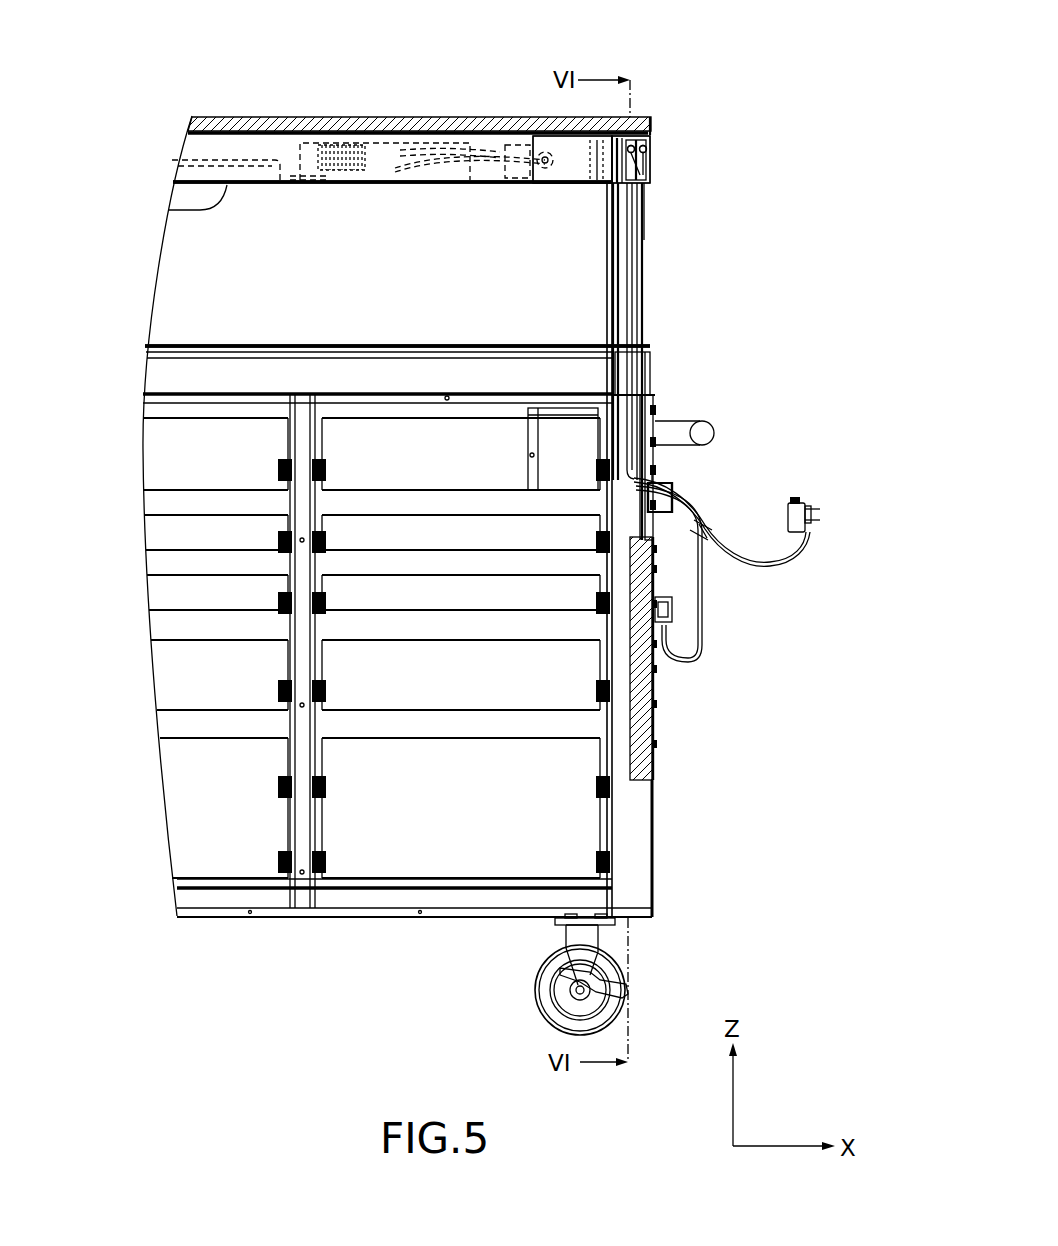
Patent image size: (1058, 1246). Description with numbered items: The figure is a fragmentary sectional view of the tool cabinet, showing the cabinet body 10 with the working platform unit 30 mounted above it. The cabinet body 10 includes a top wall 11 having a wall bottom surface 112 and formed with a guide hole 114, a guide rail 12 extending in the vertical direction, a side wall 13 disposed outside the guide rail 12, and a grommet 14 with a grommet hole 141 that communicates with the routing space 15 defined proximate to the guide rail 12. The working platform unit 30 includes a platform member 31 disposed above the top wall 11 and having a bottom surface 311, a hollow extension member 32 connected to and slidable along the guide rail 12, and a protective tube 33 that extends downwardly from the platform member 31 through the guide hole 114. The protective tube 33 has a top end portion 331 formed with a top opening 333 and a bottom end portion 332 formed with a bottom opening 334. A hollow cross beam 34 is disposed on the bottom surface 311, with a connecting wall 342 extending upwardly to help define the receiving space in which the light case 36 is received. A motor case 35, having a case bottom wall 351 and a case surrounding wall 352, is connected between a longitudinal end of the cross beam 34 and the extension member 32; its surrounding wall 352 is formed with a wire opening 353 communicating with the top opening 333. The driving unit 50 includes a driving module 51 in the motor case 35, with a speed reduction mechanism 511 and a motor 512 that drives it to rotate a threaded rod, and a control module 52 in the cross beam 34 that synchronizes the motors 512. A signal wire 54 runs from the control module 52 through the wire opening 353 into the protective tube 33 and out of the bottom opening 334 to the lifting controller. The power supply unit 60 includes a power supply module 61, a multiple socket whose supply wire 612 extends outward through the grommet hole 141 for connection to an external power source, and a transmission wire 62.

The cabinet body 10 is at (165, 822).
The top wall 11 is at (373, 392).
The wall bottom surface 112 is at (215, 397).
The guide hole 114 is at (645, 393).
The guide rail 12 is at (715, 433).
The side wall 13 is at (656, 855).
The grommet 14 is at (656, 478).
The grommet hole 141 is at (660, 497).
The routing space 15 is at (640, 812).
The working platform unit 30 is at (430, 143).
The platform member 31 is at (293, 131).
The bottom surface 311 is at (320, 145).
The extension member 32 is at (642, 280).
The protective tube 33 is at (637, 308).
The top end portion 331 is at (652, 157).
The top opening 333 is at (631, 159).
The bottom end portion 332 is at (640, 378).
The bottom opening 334 is at (652, 410).
The cross beam 34 is at (170, 208).
The connecting wall 342 is at (220, 143).
The motor case 35 is at (558, 177).
The case bottom wall 351 is at (572, 159).
The case surrounding wall 352 is at (600, 172).
The wire opening 353 is at (651, 115).
The light case 36 is at (200, 163).
The driving unit 50 is at (366, 124).
The driving module 51 is at (654, 147).
The speed reduction mechanism 511 is at (637, 149).
The motor 512 is at (648, 203).
The control module 52 is at (413, 148).
The signal wire 54 is at (483, 150).
The power supply unit 60 is at (657, 683).
The power supply module 61 is at (657, 730).
The supply wire 612 is at (798, 547).
The transmission wire 62 is at (478, 145).